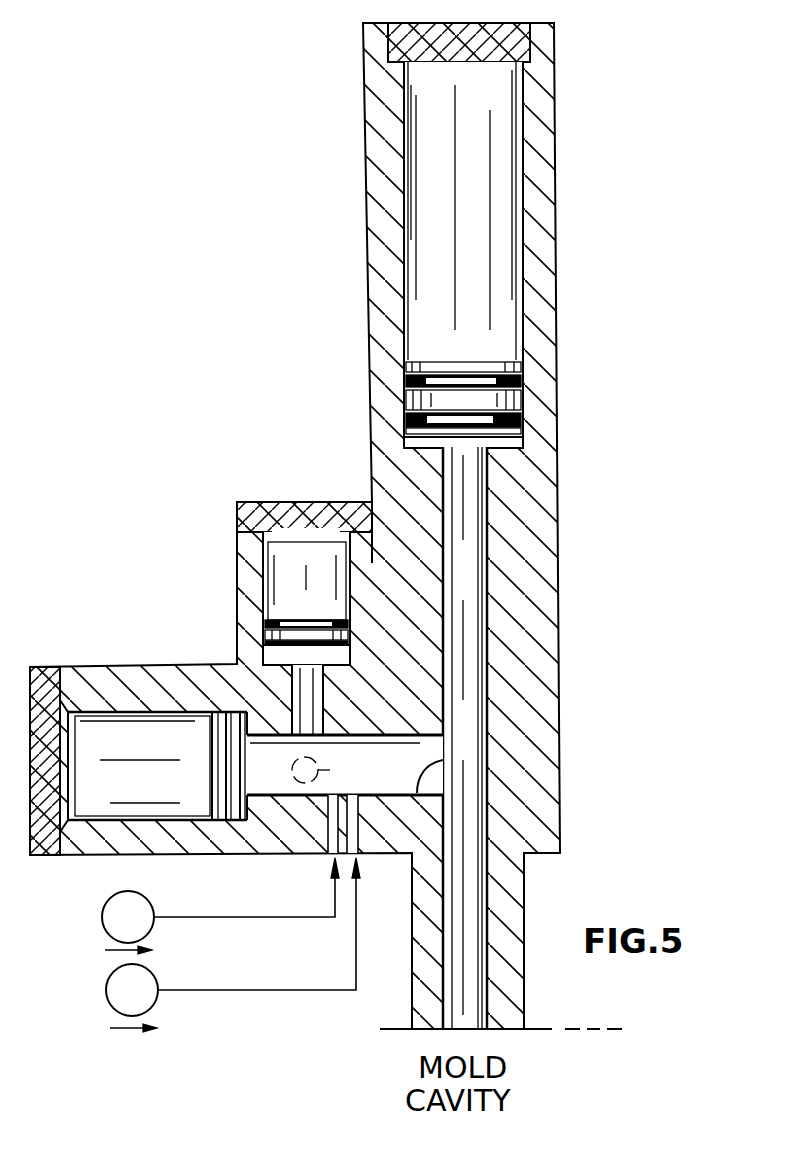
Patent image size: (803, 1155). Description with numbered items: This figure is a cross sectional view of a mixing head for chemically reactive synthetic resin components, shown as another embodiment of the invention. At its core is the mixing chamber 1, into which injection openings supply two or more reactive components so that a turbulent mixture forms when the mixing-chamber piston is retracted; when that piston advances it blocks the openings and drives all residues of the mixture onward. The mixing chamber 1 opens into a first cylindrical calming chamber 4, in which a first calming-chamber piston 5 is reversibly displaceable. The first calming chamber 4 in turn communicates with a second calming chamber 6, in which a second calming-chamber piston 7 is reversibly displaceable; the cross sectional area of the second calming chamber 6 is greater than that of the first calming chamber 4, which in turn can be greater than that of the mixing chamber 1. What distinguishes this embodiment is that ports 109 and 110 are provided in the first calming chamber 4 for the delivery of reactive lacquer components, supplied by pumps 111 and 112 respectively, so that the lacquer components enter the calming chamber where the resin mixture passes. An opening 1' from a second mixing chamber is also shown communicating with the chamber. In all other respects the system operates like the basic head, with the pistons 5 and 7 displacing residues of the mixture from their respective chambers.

The mixing chamber 1 is at (254, 638).
The opening from a second mixing chamber 1' is at (322, 771).
The first calming chamber 4 is at (419, 790).
The first calming-chamber piston 5 is at (404, 744).
The second calming chamber 6 is at (472, 498).
The second calming-chamber piston 7 is at (463, 650).
The port 109 is at (328, 820).
The port 110 is at (358, 828).
The pump 111 is at (103, 917).
The pump 112 is at (107, 992).